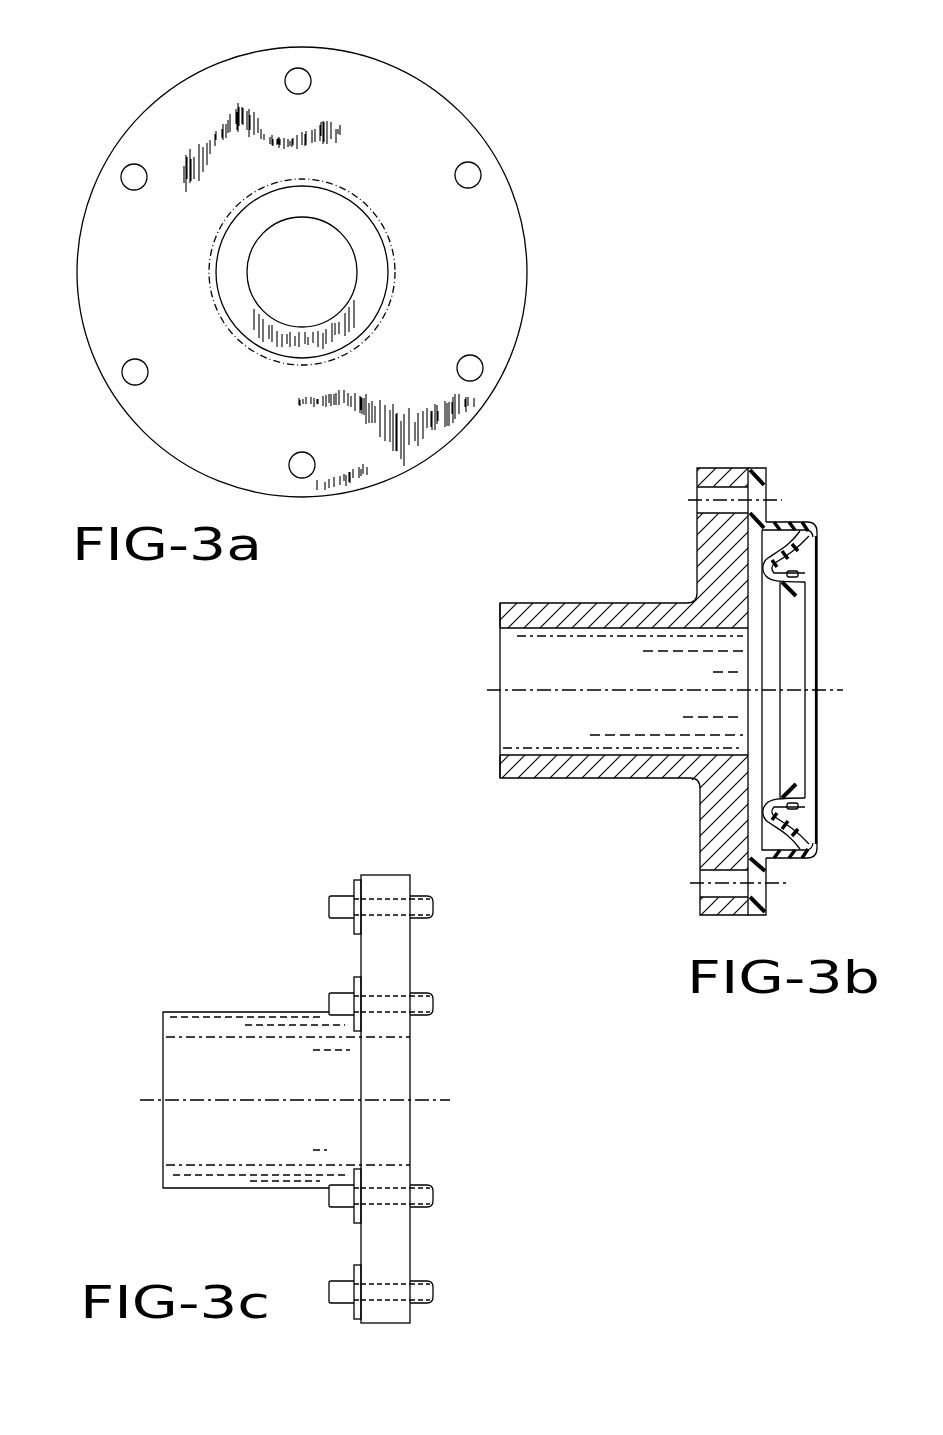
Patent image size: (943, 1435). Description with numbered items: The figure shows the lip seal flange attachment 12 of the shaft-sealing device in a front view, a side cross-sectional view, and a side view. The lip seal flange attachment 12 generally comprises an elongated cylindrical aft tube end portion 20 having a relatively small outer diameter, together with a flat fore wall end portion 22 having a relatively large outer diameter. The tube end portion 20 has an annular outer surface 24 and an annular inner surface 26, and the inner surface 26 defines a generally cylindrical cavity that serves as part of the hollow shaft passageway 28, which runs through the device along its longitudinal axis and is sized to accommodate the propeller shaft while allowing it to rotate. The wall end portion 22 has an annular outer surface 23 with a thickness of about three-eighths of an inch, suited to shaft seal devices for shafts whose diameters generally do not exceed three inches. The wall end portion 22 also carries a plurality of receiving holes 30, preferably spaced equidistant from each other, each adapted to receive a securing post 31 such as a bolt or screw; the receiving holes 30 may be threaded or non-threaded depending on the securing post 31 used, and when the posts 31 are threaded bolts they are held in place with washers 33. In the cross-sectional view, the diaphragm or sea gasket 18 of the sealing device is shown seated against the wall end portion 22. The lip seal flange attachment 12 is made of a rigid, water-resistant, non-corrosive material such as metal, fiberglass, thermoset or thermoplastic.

In FIG. 3a, the lip seal flange attachment 12 is at (150, 100).
In FIG. 3b, the lip seal flange attachment 12 is at (697, 468).
In FIG. 3c, the lip seal flange attachment 12 is at (193, 1013).
In FIG. 3b, the diaphragm or sea gasket 18 is at (757, 468).
In FIG. 3b, the elongated cylindrical aft tube end portion 20 is at (610, 770).
In FIG. 3c, the elongated cylindrical aft tube end portion 20 is at (219, 1175).
In FIG. 3a, the flat fore wall end portion 22 is at (222, 82).
In FIG. 3b, the flat fore wall end portion 22 is at (725, 538).
In FIG. 3c, the flat fore wall end portion 22 is at (410, 960).
In FIG. 3b, the annular outer surface 23 is at (730, 467).
In FIG. 3c, the annular outer surface 23 is at (386, 875).
In FIG. 3a, the annular outer surface 24 is at (343, 192).
In FIG. 3b, the annular outer surface 24 is at (565, 603).
In FIG. 3a, the annular inner surface 26 is at (342, 234).
In FIG. 3b, the annular inner surface 26 is at (540, 762).
In FIG. 3a, the shaft passageway 28 is at (293, 287).
In FIG. 3b, the shaft passageway 28 is at (540, 658).
In FIG. 3a, the receiving holes 30 is at (124, 172).
In FIG. 3c, the securing post 31 is at (340, 903).
In FIG. 3c, the washers 33 is at (353, 935).